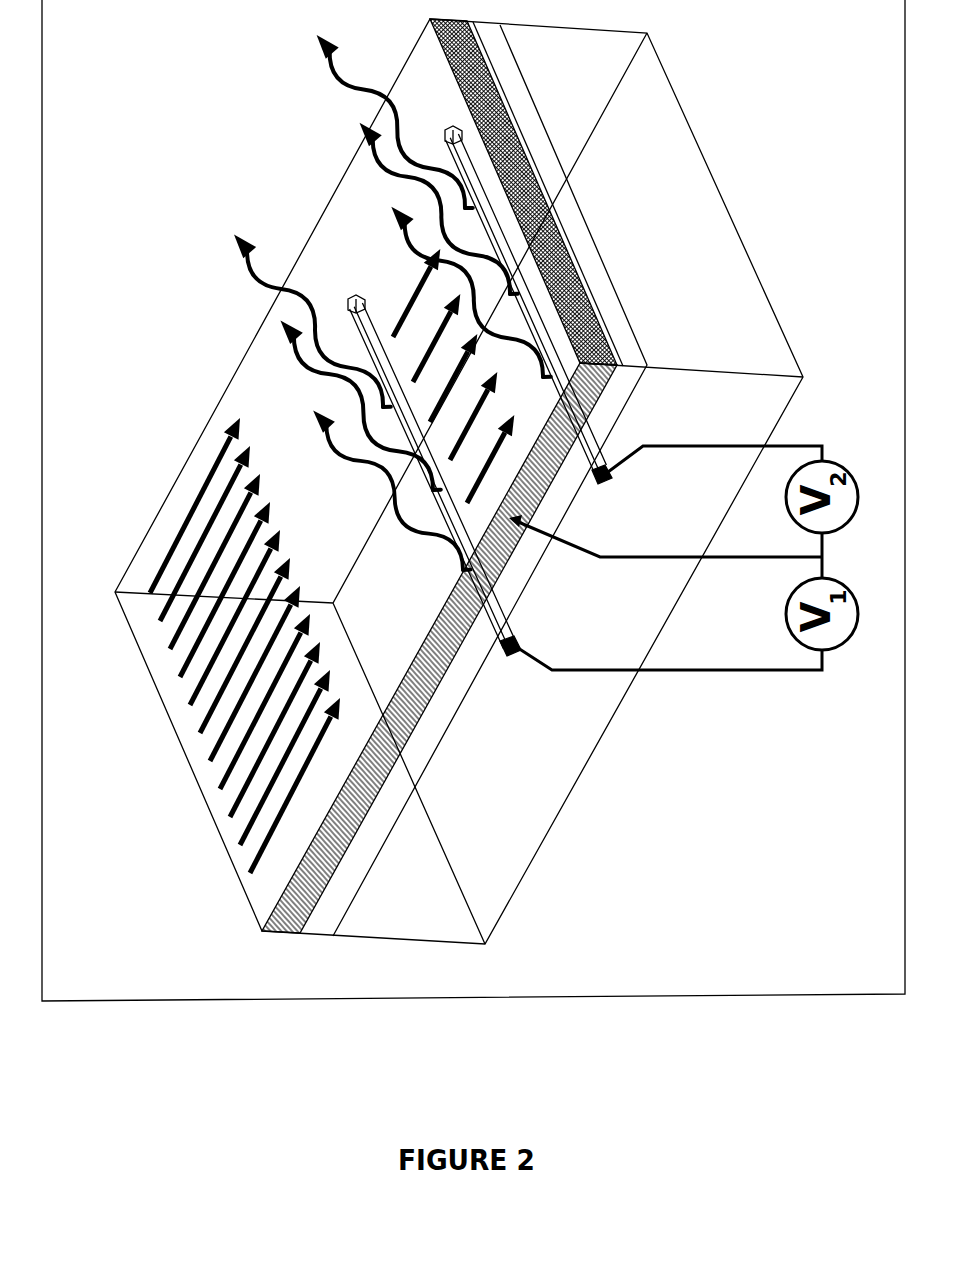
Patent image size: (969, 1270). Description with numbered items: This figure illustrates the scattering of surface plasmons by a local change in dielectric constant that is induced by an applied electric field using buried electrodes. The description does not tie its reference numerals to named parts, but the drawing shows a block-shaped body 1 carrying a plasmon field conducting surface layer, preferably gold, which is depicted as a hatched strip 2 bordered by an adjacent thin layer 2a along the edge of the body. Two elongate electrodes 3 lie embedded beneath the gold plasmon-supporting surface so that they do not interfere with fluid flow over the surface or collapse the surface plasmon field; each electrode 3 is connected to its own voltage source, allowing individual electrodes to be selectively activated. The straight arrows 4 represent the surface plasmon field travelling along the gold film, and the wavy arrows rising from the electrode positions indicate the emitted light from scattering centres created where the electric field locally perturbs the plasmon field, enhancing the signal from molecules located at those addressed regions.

The substrate 1 is at (448, 900).
The electrode 2 is at (300, 918).
The electrode layer 2a is at (352, 877).
The ridge electrodes 3 is at (603, 486).
The arrows (surface propagation) 4 is at (187, 687).